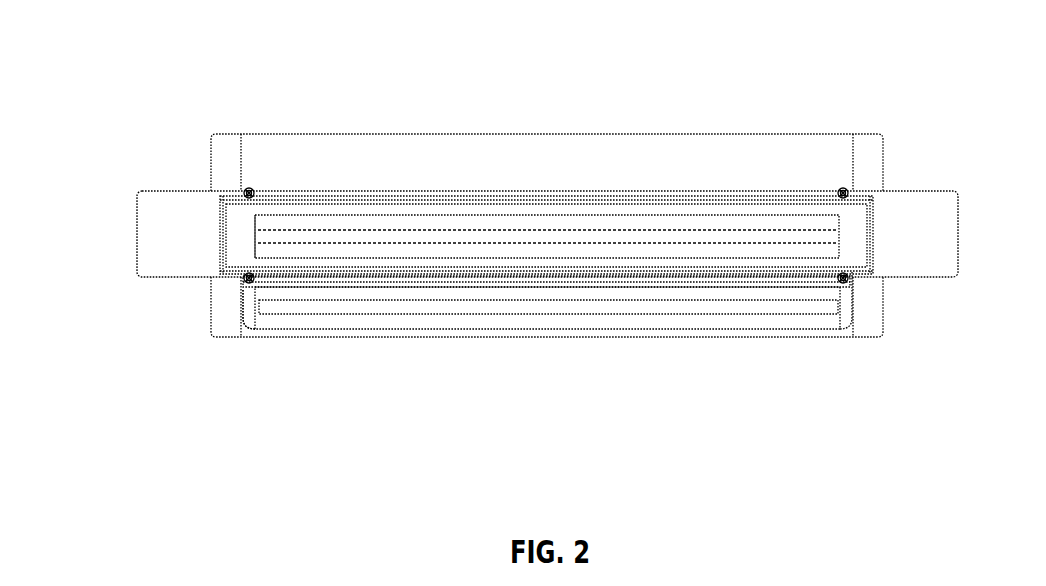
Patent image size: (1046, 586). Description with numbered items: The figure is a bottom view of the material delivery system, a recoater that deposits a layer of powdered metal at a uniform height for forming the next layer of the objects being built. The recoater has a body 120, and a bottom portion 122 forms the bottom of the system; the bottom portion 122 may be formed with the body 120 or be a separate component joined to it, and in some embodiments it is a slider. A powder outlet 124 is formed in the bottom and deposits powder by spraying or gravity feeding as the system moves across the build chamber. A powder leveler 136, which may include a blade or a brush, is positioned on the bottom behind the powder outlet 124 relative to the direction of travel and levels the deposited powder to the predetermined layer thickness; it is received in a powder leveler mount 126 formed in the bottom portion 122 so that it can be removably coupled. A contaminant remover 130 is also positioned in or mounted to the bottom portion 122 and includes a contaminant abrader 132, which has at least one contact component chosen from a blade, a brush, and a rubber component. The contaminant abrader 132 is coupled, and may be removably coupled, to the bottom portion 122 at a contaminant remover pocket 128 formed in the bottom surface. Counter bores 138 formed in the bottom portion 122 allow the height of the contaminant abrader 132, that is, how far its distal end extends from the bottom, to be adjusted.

The body 120 is at (152, 242).
The bottom portion 122 is at (520, 82).
The powder outlet 124 is at (720, 280).
The powder leveler mount 126 is at (232, 222).
The contaminant remover pocket 128 is at (243, 308).
The contaminant remover 130 is at (432, 322).
The contaminant abrader 132 is at (354, 310).
The powder leveler 136 is at (257, 240).
The counter bores 138 is at (848, 283).